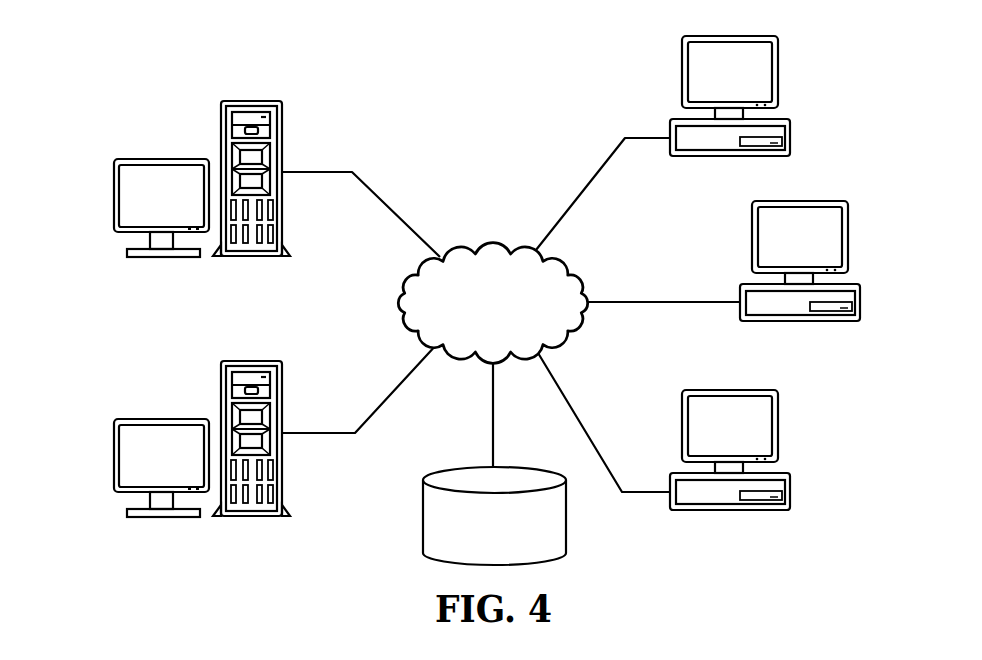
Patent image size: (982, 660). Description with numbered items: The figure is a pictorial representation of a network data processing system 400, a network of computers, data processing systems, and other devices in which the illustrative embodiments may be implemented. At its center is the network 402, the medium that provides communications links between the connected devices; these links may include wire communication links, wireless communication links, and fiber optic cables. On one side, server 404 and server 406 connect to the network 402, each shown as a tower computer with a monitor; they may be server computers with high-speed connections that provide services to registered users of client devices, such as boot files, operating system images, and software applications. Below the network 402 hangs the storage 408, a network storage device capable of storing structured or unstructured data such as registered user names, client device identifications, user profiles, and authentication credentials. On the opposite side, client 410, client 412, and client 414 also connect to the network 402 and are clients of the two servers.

The network data processing system 400 is at (359, 81).
The network 402 is at (468, 250).
The server 404 is at (115, 455).
The server 406 is at (114, 197).
The storage 408 is at (423, 515).
The client 410 is at (790, 128).
The client 412 is at (862, 310).
The client 414 is at (790, 498).